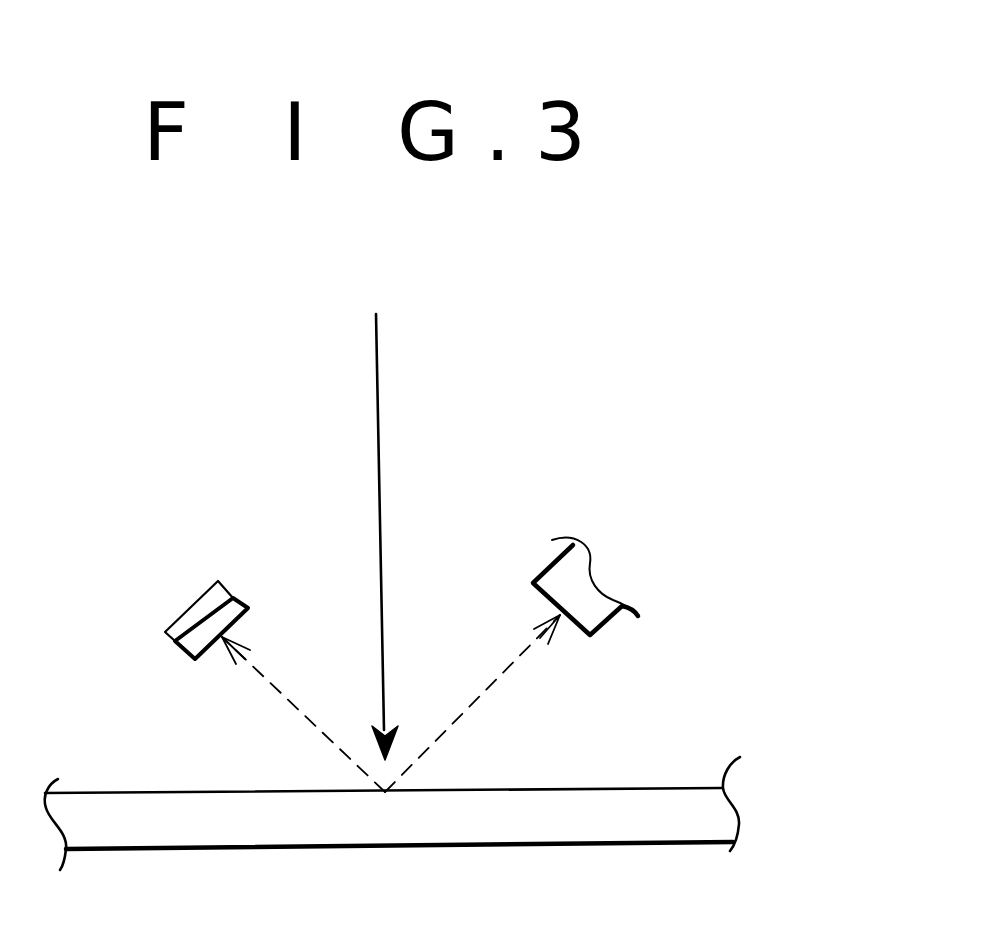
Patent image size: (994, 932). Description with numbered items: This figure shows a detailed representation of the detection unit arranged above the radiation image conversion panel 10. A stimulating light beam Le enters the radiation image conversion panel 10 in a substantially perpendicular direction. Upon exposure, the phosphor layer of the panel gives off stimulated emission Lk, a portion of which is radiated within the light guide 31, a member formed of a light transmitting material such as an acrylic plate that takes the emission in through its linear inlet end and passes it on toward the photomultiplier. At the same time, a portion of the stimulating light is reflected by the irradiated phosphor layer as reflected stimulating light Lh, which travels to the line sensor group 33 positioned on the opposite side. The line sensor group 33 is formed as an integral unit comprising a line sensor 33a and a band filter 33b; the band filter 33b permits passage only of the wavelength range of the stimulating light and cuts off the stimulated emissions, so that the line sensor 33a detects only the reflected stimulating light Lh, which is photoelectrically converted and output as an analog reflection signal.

The radiation image conversion panel 10 is at (754, 810).
The light guide 31 is at (598, 617).
The line sensor group 33 is at (211, 619).
The line sensor 33a is at (205, 600).
The band filter 33b is at (233, 611).
The stimulating light beam Le is at (407, 537).
The reflected stimulating light Lh is at (271, 674).
The stimulated emission Lk is at (517, 660).